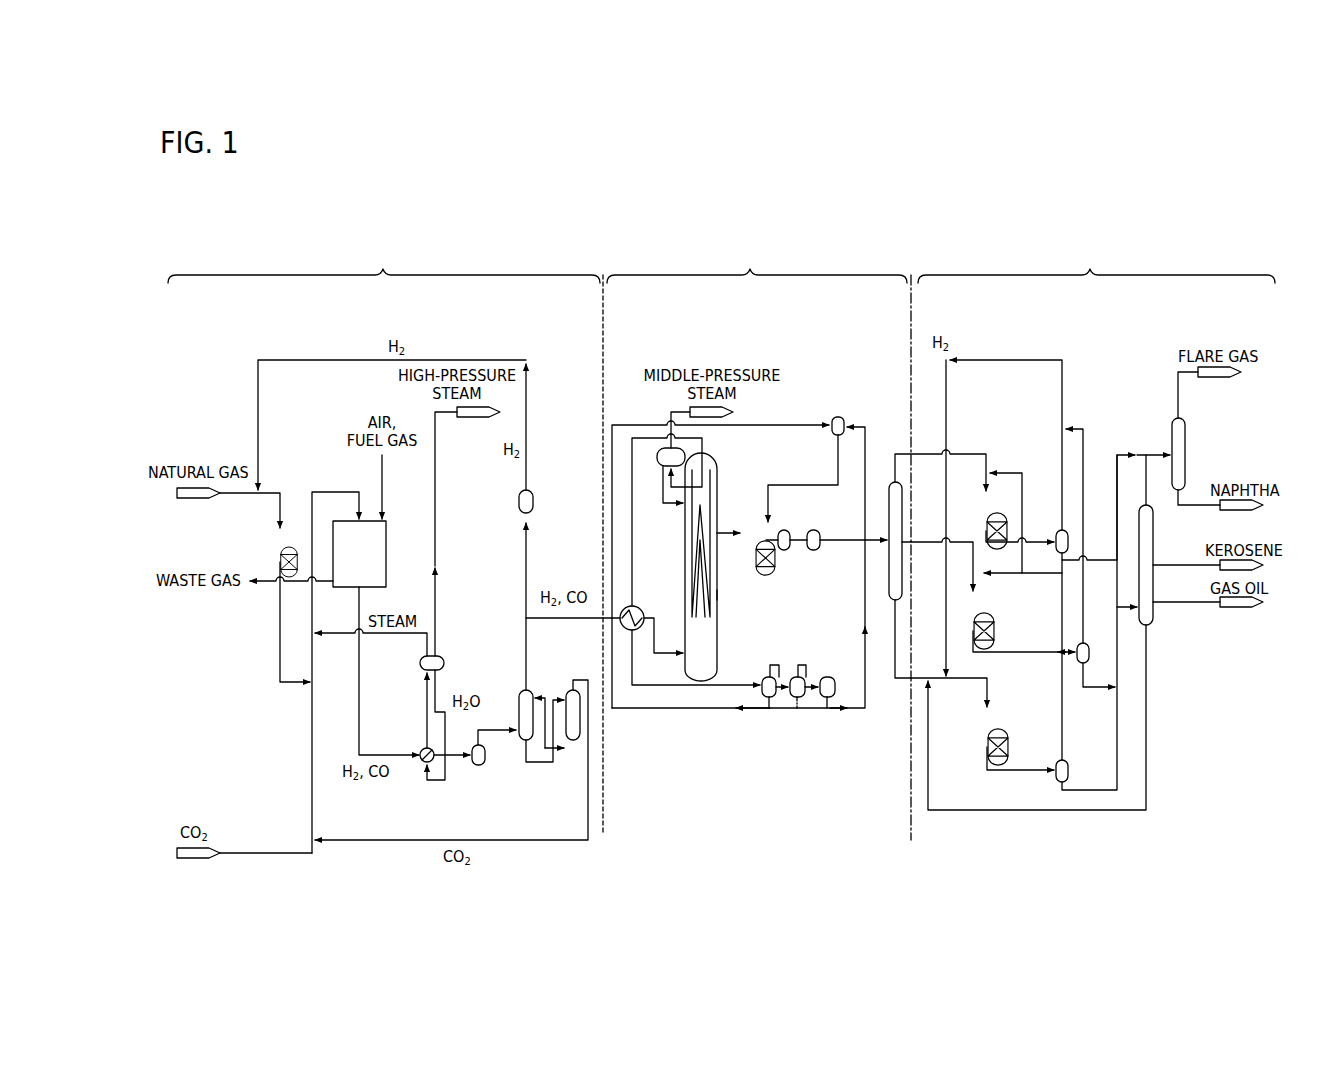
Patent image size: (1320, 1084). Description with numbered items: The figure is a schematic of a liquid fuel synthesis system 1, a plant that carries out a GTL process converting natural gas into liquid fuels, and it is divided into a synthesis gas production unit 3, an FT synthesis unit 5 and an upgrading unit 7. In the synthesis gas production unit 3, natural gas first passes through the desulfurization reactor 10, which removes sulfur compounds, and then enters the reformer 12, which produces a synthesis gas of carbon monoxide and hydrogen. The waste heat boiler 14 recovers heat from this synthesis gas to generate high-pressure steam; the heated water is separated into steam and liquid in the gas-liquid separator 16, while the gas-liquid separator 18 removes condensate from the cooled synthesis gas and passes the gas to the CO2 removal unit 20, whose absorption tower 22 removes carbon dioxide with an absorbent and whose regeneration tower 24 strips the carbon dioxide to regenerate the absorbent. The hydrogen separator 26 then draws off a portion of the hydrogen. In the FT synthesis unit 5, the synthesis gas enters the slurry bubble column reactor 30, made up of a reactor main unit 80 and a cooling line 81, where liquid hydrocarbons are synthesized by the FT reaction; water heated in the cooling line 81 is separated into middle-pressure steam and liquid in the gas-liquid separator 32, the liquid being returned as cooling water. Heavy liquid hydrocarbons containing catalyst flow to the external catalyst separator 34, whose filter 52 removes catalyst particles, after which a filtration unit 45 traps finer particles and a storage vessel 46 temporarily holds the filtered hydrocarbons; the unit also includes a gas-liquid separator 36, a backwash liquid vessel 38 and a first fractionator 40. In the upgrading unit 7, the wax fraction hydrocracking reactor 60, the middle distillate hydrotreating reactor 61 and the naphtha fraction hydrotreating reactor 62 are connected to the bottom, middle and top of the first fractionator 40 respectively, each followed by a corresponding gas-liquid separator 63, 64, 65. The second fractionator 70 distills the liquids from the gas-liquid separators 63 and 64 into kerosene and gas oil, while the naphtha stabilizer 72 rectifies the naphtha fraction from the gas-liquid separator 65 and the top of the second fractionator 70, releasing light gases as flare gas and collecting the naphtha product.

The liquid fuel synthesis system 1 is at (870, 240).
The synthesis gas production unit 3 is at (384, 263).
The FT synthesis unit 5 is at (757, 263).
The upgrading unit 7 is at (1096, 263).
The desulfurization reactor 10 is at (271, 546).
The reformer 12 is at (386, 541).
The waste heat boiler 14 is at (424, 763).
The gas-liquid separator 16 is at (418, 663).
The gas-liquid separator 18 is at (478, 765).
The CO2 removal unit 20 is at (543, 761).
The absorption tower 22 is at (524, 745).
The regeneration tower 24 is at (573, 745).
The hydrogen separator 26 is at (532, 495).
The slurry bubble column reactor 30 is at (706, 567).
The gas-liquid separator 32 is at (660, 467).
The external catalyst separator 34 is at (750, 561).
The gas-liquid separator 36 is at (796, 658).
The backwash liquid vessel 38 is at (840, 417).
The first fractionator 40 is at (888, 500).
The filtration unit 45 is at (784, 530).
The storage vessel 46 is at (814, 530).
The filter 52 is at (735, 583).
The wax fraction hydrocracking reactor 60 is at (1000, 727).
The middle distillate hydrotreating reactor 61 is at (986, 608).
The naphtha fraction hydrotreating reactor 62 is at (999, 502).
The gas-liquid separator 63 is at (1064, 762).
The gas-liquid separator 64 is at (1084, 643).
The gas-liquid separator 65 is at (1068, 531).
The second fractionator 70 is at (1154, 625).
The naphtha stabilizer 72 is at (1185, 432).
The reactor main unit 80 is at (680, 659).
The cooling line 81 is at (691, 558).